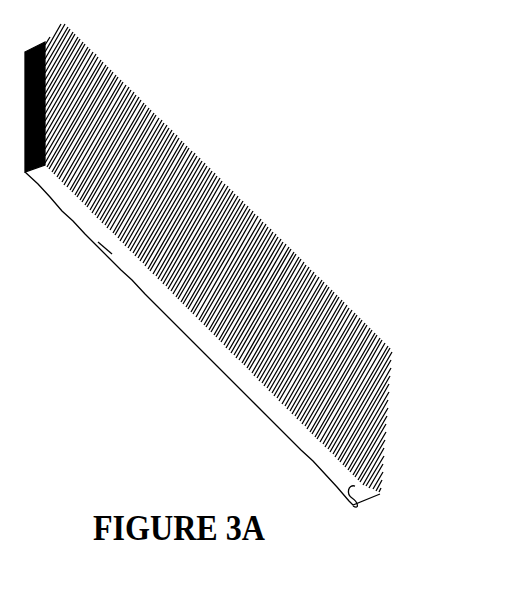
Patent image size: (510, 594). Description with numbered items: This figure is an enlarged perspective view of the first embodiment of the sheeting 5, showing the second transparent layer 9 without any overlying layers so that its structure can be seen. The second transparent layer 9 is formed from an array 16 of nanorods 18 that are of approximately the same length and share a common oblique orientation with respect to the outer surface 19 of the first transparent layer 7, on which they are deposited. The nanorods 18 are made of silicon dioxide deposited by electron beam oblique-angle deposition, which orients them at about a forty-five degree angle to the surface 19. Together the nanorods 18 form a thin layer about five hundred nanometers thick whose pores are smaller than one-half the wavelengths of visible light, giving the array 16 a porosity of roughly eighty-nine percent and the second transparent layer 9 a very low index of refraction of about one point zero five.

The brush 5 is at (241, 303).
The first transparent layer 7 is at (200, 330).
The second transparent layer 9 is at (314, 273).
The array 16 is at (400, 363).
The nanorods 18 is at (353, 504).
The outer surface 19 is at (126, 242).